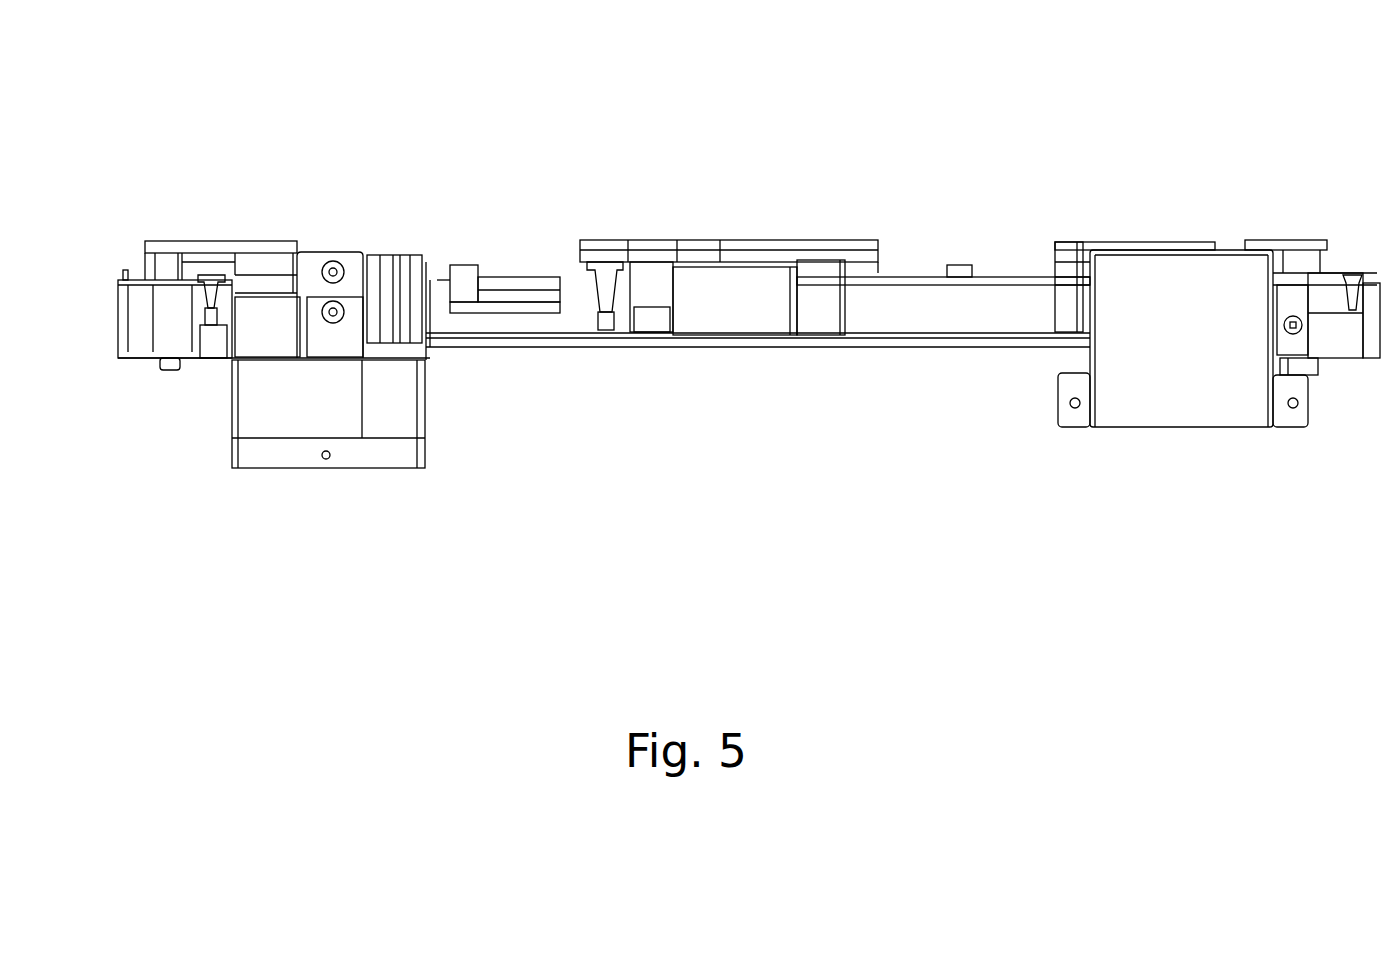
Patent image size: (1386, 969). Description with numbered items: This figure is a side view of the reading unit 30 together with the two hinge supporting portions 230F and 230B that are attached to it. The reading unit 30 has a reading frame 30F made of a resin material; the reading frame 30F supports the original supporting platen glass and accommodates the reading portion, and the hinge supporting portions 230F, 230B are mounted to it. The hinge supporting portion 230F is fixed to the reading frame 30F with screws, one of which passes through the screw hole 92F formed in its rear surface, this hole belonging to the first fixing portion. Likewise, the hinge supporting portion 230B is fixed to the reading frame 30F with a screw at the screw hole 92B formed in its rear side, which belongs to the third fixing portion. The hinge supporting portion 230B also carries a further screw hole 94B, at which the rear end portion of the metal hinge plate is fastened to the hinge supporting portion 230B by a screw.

The reading unit 30 is at (740, 170).
The reading frame 30F is at (980, 308).
The screw hole 94B is at (332, 261).
The screw hole 92B is at (340, 318).
The screw hole 92F is at (1296, 316).
The hinge supporting portion 230B is at (392, 422).
The hinge supporting portion 230F is at (1155, 372).